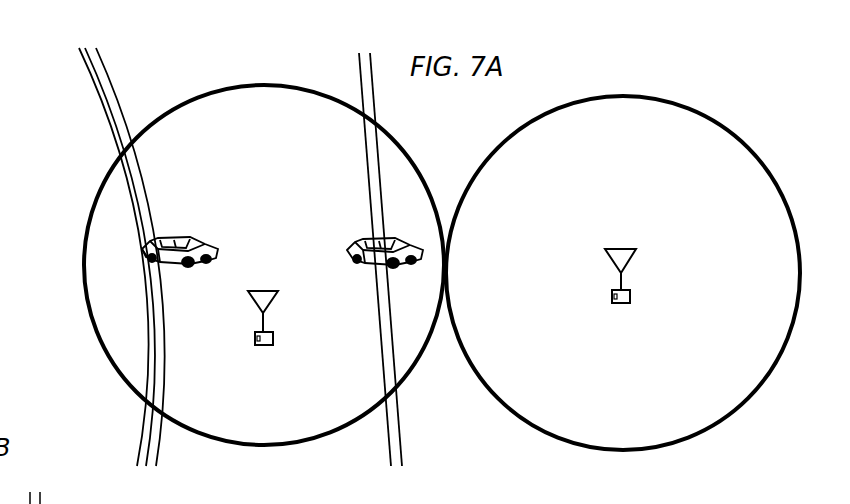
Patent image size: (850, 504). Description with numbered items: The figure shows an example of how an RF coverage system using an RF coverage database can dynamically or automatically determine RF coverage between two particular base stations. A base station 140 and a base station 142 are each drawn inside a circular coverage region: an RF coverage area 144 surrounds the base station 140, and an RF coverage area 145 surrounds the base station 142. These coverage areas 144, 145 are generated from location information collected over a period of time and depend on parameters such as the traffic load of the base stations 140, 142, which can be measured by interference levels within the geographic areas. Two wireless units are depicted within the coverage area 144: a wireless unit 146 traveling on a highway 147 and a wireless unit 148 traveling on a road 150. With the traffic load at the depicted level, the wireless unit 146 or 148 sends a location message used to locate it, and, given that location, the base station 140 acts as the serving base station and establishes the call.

The base station 140 is at (275, 333).
The base station 142 is at (632, 291).
The RF coverage area 144 is at (85, 268).
The RF coverage area 145 is at (758, 160).
The wireless unit 146 is at (193, 233).
The highway 147 is at (112, 130).
The wireless unit 148 is at (347, 252).
The road 150 is at (365, 155).